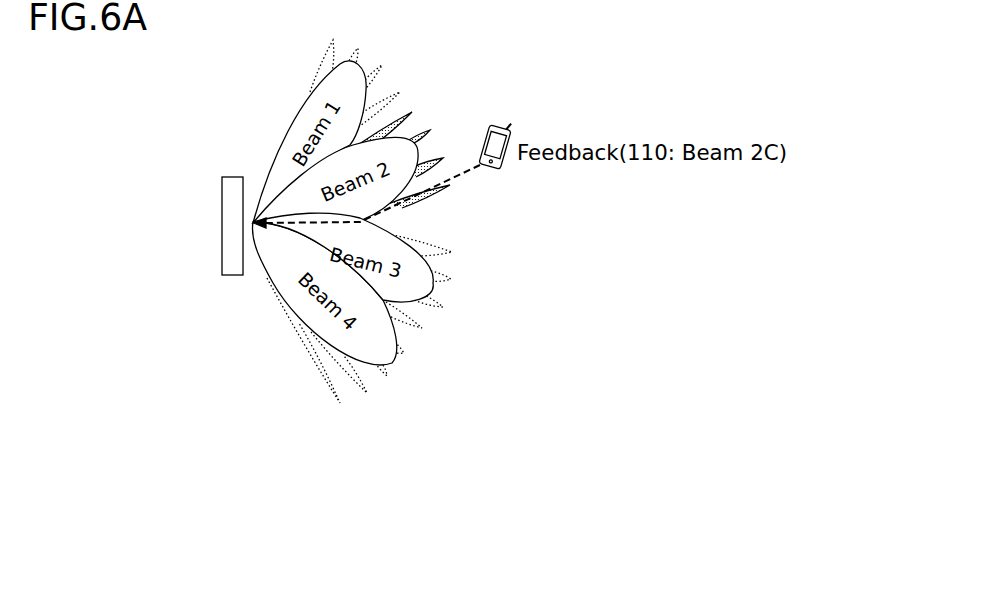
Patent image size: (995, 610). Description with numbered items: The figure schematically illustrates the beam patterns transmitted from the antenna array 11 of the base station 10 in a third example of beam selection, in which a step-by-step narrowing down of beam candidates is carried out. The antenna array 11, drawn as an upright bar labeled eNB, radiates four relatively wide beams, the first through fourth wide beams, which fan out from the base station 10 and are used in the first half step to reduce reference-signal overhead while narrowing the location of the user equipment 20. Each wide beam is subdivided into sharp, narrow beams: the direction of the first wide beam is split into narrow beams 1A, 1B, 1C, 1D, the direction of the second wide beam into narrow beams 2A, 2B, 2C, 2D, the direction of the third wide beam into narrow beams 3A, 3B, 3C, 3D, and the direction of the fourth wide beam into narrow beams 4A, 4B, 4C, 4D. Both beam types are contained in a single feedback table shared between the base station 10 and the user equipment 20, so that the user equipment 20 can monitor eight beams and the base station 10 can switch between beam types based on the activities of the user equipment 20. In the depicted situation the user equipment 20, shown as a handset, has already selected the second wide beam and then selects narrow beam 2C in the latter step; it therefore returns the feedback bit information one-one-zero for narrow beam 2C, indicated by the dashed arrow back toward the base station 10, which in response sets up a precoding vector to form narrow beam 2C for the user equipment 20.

The base station 10 is at (222, 222).
The antenna array 11 is at (231, 177).
The user equipment 20 is at (497, 127).
The narrow beam 1A is at (325, 55).
The narrow beam 1B is at (362, 48).
The narrow beam 1C is at (386, 72).
The narrow beam 1D is at (394, 101).
The narrow beam 2A is at (396, 124).
The narrow beam 2B is at (435, 131).
The narrow beam 2C is at (442, 163).
The narrow beam 2D is at (435, 193).
The narrow beam 3A is at (440, 249).
The narrow beam 3B is at (454, 282).
The narrow beam 3C is at (441, 309).
The narrow beam 3D is at (417, 324).
The narrow beam 4A is at (412, 355).
The narrow beam 4B is at (392, 378).
The narrow beam 4C is at (348, 373).
The narrow beam 4D is at (311, 355).